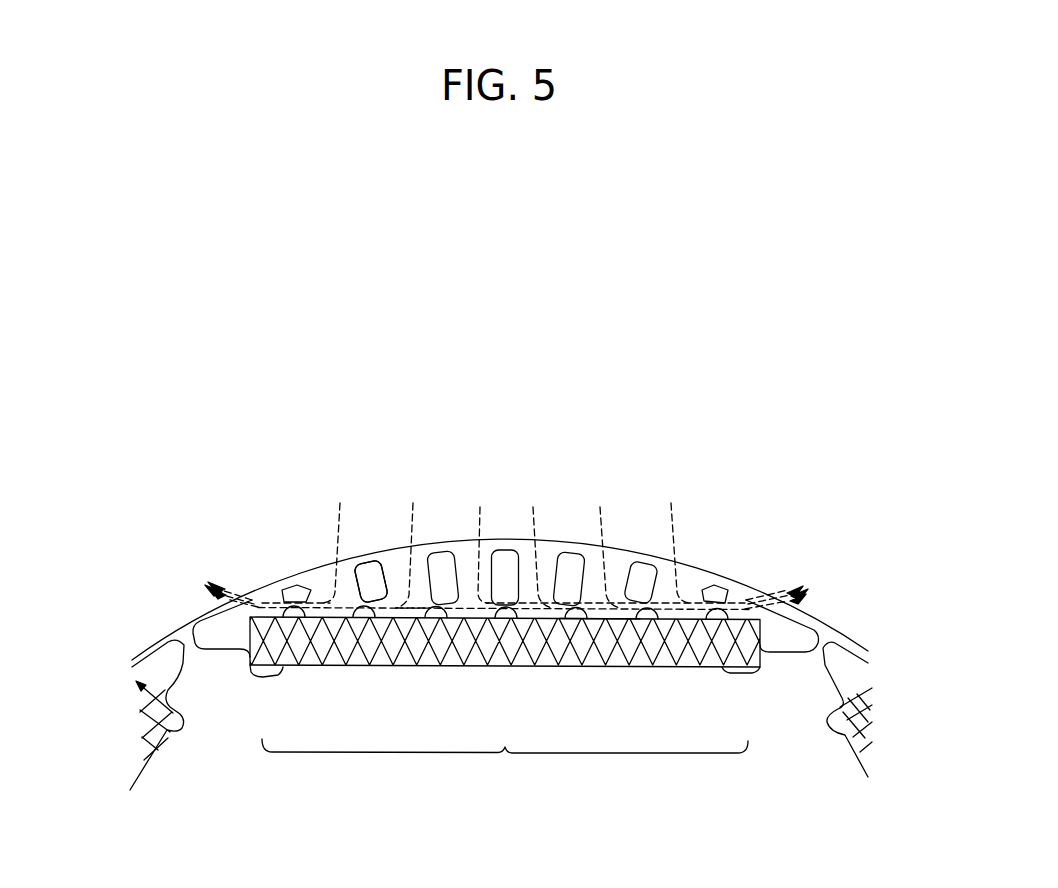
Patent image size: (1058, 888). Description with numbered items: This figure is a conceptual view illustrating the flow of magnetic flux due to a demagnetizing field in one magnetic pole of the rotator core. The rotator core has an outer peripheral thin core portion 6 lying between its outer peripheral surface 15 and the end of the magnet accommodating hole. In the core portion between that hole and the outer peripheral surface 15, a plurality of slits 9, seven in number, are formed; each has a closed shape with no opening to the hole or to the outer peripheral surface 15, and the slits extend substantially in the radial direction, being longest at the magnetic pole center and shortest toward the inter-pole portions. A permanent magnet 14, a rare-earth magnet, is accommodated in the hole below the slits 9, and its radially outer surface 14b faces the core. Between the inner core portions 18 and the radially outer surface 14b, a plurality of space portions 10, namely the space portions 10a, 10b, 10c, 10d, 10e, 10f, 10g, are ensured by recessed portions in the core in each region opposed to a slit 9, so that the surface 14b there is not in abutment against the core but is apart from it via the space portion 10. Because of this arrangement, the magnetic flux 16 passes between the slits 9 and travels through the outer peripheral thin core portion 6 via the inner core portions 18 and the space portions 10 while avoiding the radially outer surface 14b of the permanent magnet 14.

The outer peripheral thin core portion 6 is at (201, 617).
The outer peripheral surface 15 is at (312, 568).
The slits 9 is at (374, 578).
The inner core portions 18 is at (428, 607).
The magnetic flux 16 is at (482, 515).
The permanent magnet 14 is at (328, 646).
The radially outer surface 14b is at (607, 618).
The space portions 10 is at (505, 766).
The space portion 10a is at (295, 618).
The space portion 10b is at (364, 618).
The space portion 10c is at (436, 618).
The space portion 10d is at (507, 618).
The space portion 10e is at (577, 618).
The space portion 10f is at (648, 618).
The space portion 10g is at (717, 618).